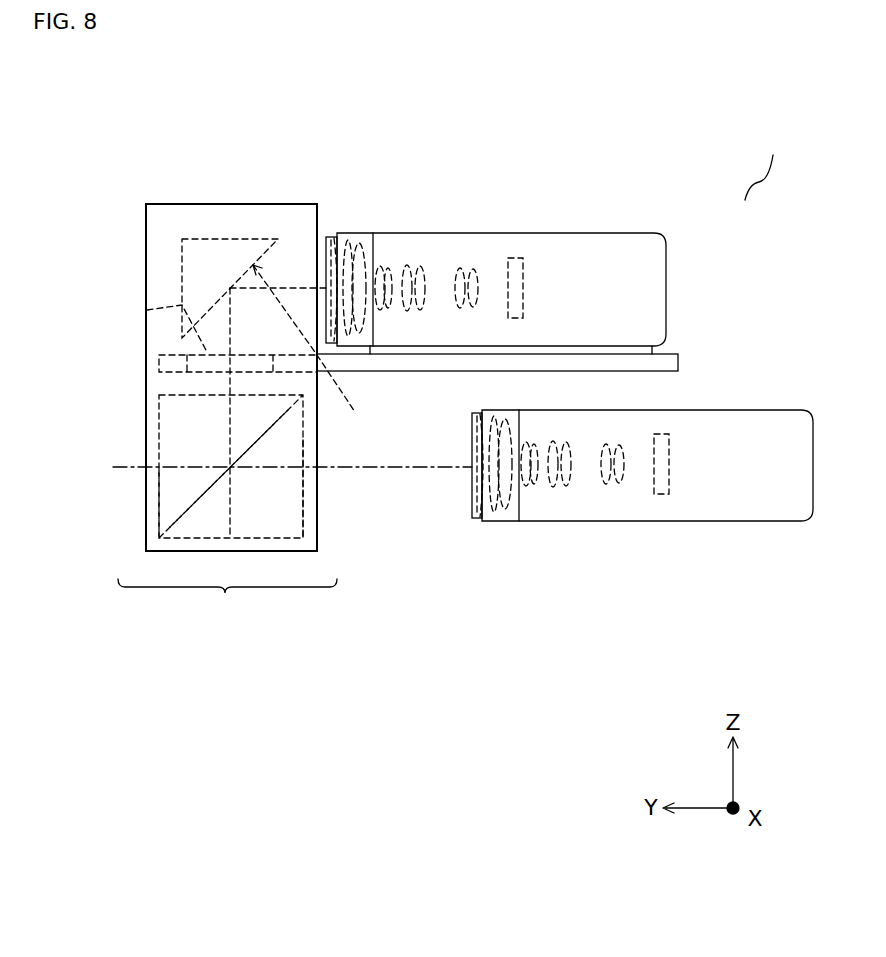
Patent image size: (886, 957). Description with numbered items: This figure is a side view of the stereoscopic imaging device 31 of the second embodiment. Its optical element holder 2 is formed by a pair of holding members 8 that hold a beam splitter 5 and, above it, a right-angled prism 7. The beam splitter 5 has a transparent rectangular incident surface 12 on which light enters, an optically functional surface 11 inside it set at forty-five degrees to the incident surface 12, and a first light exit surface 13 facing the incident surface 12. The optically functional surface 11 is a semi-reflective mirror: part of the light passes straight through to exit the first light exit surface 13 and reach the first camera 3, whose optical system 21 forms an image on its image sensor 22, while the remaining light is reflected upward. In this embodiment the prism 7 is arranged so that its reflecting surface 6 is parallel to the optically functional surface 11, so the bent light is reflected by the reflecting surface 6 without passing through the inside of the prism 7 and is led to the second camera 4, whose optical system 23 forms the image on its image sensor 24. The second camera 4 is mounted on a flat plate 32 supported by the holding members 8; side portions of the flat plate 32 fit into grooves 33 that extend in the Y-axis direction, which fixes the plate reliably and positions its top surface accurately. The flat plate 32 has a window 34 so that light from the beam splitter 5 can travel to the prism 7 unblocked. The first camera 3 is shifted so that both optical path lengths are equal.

The optical element holder 2 is at (227, 600).
The first camera 3 is at (775, 505).
The second camera 4 is at (604, 240).
The beam splitter 5 is at (167, 430).
The reflecting surface 6 is at (311, 350).
The right-angled prism 7 is at (243, 239).
The holding members 8 is at (164, 210).
The optically functional surface 11 is at (200, 498).
The incident surface 12 is at (159, 507).
The first light exit surface 13 is at (304, 511).
The optical system 21 is at (473, 520).
The image sensor 22 is at (653, 497).
The optical system 23 is at (330, 234).
The image sensor 24 is at (508, 258).
The stereoscopic imaging device 31 is at (797, 157).
The flat plate 32 is at (682, 350).
The groove 33 is at (159, 356).
The window 34 is at (140, 305).